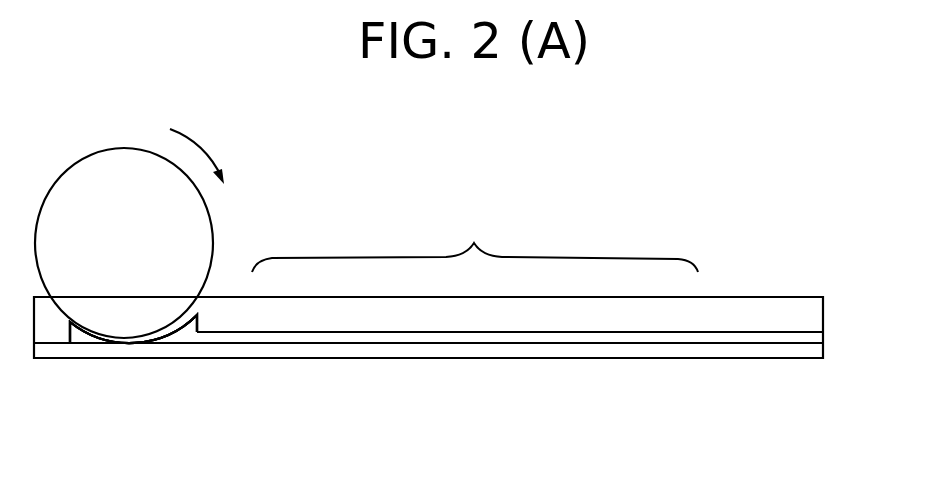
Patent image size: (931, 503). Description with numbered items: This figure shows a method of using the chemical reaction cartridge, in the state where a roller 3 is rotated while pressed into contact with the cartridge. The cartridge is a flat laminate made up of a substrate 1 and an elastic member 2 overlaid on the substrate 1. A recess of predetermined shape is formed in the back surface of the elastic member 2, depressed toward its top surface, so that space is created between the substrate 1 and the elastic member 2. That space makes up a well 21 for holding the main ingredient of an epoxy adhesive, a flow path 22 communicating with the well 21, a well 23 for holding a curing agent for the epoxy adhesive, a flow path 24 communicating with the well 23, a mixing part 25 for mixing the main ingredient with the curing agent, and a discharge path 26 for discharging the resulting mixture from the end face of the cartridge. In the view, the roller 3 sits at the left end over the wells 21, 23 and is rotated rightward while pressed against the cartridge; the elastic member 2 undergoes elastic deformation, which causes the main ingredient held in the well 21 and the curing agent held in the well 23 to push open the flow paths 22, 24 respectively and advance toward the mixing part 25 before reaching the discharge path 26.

The substrate 1 is at (823, 353).
The elastic member 2 is at (823, 313).
The roller 3 is at (98, 151).
The well 21 is at (80, 338).
The flow path 22 is at (223, 341).
The well 23 is at (95, 445).
The flow path 24 is at (285, 417).
The mixing part 25 is at (475, 243).
The discharge path 26 is at (758, 338).